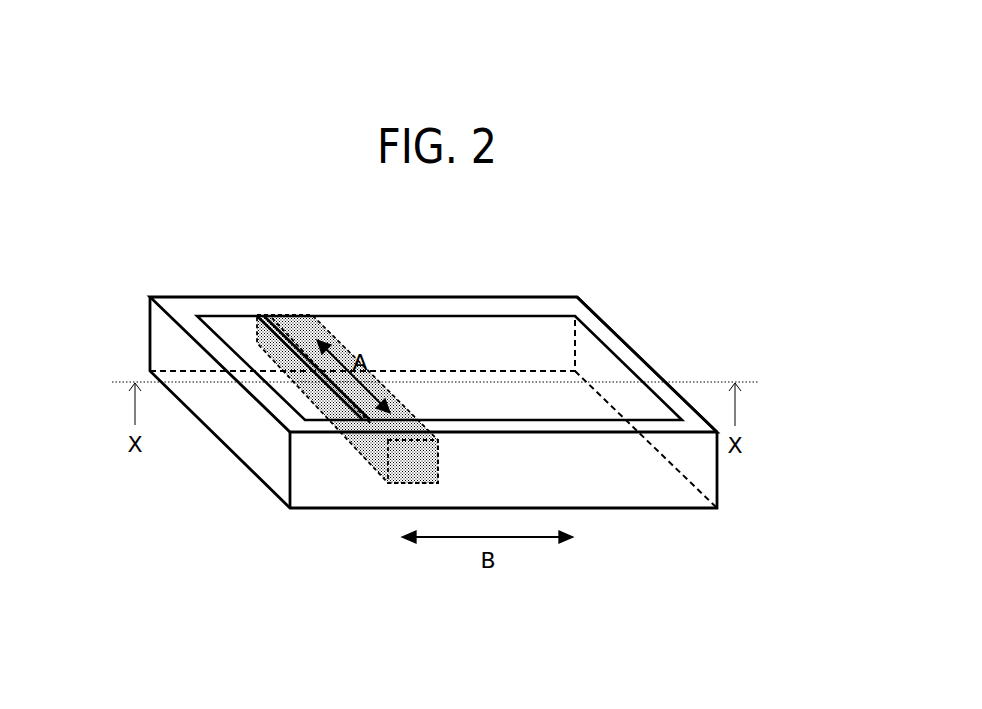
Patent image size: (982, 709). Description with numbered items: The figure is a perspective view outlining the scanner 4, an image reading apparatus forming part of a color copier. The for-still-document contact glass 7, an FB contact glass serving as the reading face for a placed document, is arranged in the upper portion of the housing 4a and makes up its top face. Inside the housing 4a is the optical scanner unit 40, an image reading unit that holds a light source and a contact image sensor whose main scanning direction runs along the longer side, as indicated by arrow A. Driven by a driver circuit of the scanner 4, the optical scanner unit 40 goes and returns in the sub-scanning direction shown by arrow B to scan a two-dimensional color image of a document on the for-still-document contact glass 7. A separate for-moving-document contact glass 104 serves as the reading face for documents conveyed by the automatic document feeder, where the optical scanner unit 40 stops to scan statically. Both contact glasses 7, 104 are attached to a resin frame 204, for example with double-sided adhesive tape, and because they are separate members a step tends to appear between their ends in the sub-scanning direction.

The scanner 4 is at (565, 258).
The housing 4a is at (610, 322).
The for-still-document contact glass 7 is at (426, 328).
The optical scanner unit 40 is at (403, 470).
The for-moving-document contact glass 104 is at (232, 330).
The resin frame 204 is at (337, 310).